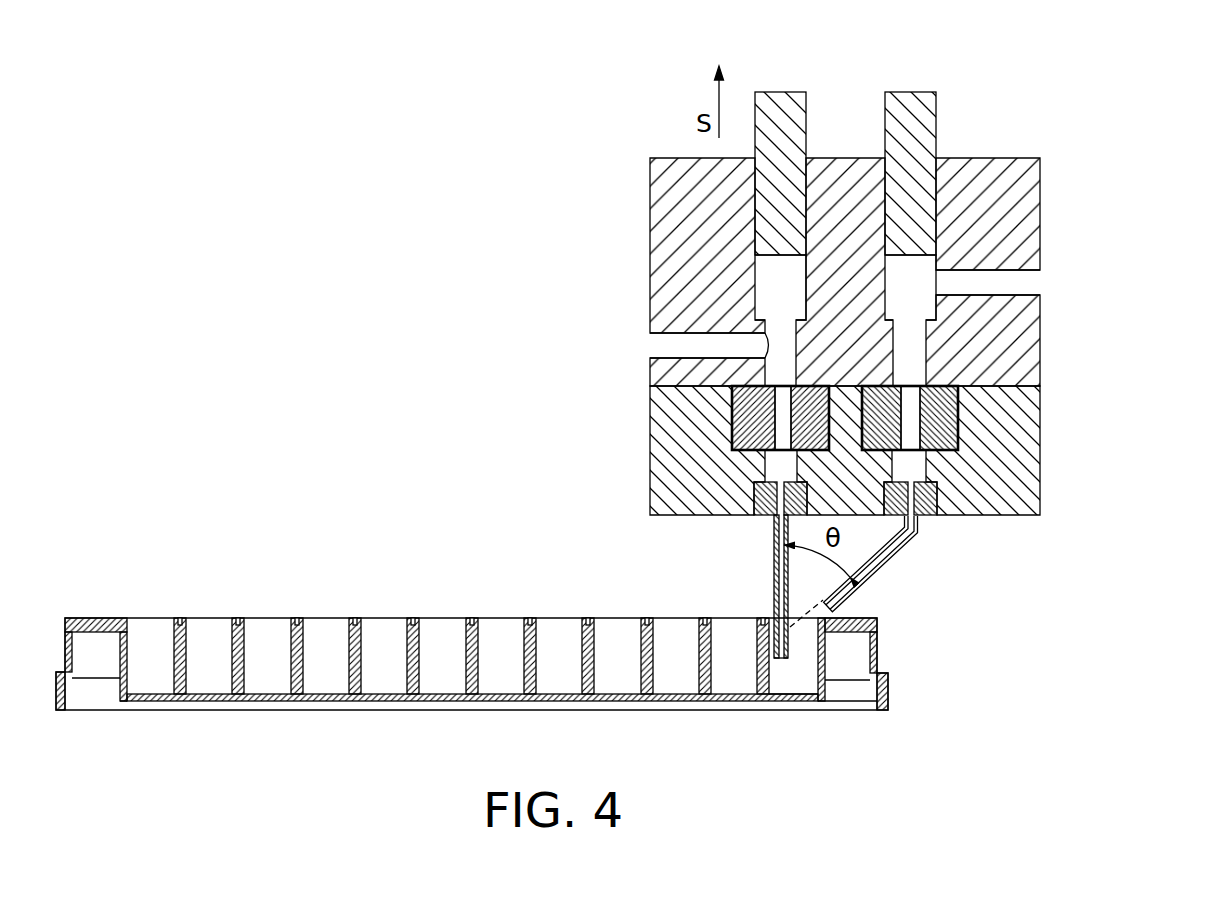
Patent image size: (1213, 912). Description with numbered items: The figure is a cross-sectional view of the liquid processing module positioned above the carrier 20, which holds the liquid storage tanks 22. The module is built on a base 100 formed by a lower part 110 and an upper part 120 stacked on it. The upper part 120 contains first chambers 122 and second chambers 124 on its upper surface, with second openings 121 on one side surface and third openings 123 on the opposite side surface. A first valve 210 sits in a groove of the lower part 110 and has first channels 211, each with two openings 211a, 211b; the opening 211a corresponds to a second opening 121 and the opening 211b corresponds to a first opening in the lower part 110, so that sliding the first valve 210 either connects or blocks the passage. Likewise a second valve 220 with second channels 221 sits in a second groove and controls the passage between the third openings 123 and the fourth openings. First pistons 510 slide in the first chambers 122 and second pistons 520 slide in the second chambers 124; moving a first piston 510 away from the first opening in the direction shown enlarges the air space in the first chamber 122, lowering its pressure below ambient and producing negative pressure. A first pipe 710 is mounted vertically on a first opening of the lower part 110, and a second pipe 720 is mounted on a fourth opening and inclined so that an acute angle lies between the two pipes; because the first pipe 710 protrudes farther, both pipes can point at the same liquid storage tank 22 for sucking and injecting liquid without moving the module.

The carrier 20 is at (510, 664).
The liquid storage tank 22 is at (795, 672).
The base 100 is at (922, 336).
The lower part 110 is at (889, 450).
The upper part 120 is at (1020, 333).
The second opening 121 is at (647, 345).
The first chamber 122 is at (782, 287).
The third opening 123 is at (1046, 282).
The second chamber 124 is at (903, 285).
The first valve 210 is at (693, 400).
The first channel 211 is at (782, 408).
The opening of first channel 211a is at (779, 386).
The opening of first channel 211b is at (779, 448).
The second valve 220 is at (995, 442).
The second channel 221 is at (912, 423).
The first piston 510 is at (781, 100).
The second piston 520 is at (911, 100).
The first pipe 710 is at (773, 563).
The second pipe 720 is at (888, 560).